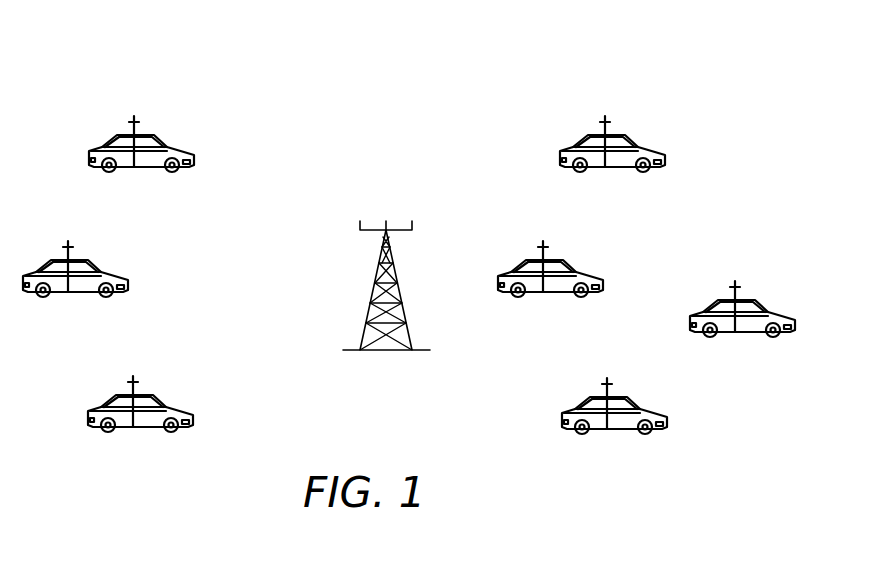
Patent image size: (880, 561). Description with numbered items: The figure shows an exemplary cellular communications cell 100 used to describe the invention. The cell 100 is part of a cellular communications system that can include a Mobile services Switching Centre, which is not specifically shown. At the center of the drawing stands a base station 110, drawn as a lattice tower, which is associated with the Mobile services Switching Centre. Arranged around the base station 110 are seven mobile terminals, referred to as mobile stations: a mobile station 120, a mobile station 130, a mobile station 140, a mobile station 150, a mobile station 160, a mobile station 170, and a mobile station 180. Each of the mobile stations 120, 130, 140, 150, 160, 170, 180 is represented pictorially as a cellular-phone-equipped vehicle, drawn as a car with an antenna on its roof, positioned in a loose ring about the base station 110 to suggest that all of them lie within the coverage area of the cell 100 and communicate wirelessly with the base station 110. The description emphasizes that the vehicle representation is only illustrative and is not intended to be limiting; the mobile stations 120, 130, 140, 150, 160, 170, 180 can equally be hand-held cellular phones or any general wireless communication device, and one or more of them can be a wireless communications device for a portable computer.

The cell 100 is at (683, 73).
The base station 110 is at (413, 225).
The mobile station 120 is at (632, 141).
The mobile station 130 is at (570, 266).
The mobile station 140 is at (634, 403).
The mobile station 150 is at (160, 401).
The mobile station 160 is at (95, 266).
The mobile station 170 is at (161, 141).
The mobile station 180 is at (762, 306).